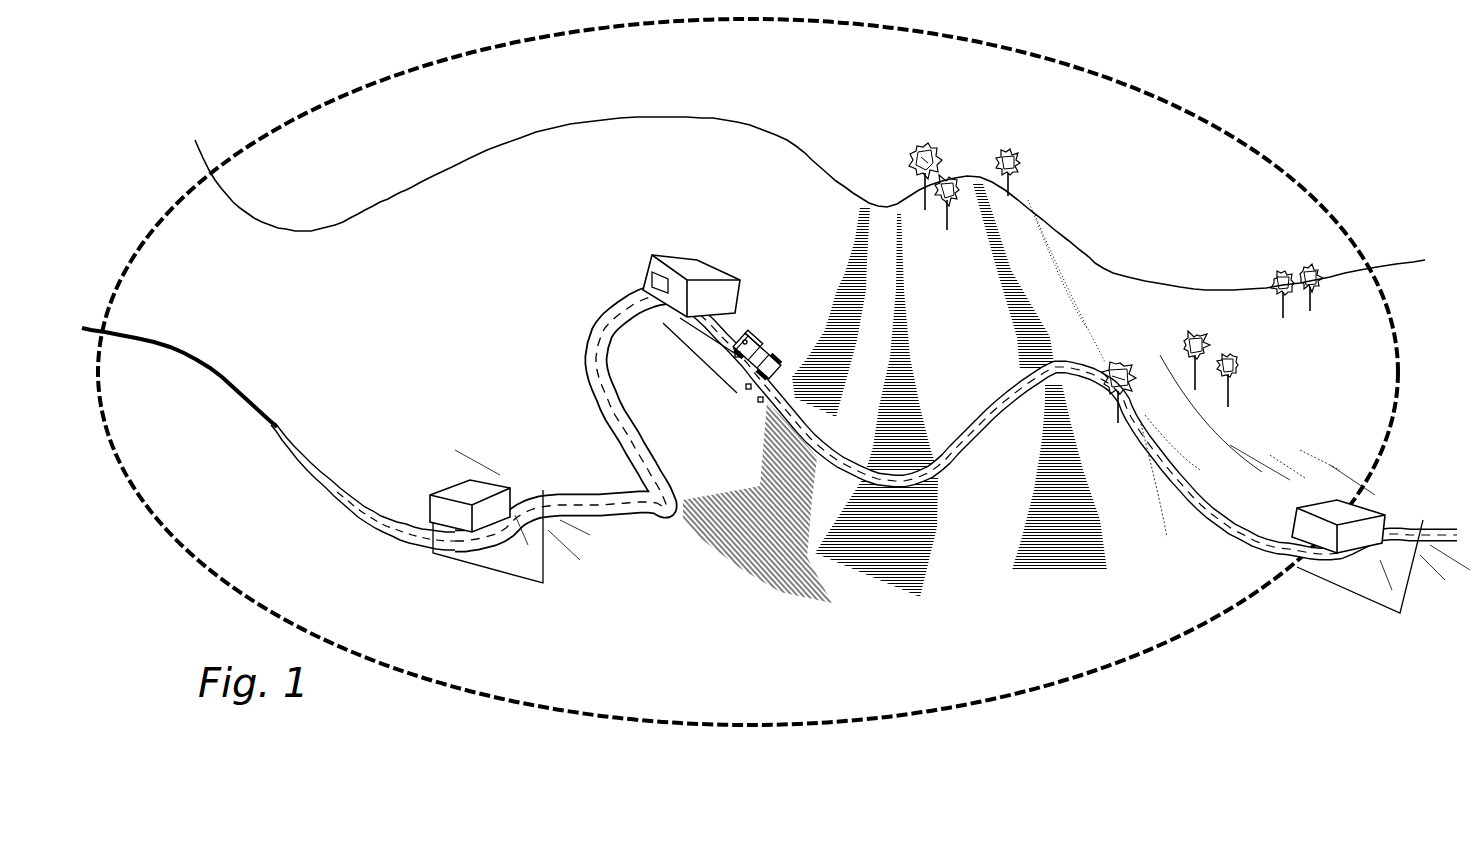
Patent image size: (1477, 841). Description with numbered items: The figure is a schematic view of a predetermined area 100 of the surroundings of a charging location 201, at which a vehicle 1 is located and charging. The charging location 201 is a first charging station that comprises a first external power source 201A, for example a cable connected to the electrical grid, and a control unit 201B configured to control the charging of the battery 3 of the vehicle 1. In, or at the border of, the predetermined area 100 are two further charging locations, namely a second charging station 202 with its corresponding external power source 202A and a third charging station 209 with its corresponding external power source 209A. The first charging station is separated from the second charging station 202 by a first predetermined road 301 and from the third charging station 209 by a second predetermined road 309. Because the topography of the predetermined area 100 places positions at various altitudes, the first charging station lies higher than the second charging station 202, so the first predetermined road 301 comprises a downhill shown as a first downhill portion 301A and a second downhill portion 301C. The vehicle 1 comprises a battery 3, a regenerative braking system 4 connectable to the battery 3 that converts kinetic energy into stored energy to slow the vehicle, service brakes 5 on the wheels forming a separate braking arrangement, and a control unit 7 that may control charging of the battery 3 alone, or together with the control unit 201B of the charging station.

The predetermined area 100 is at (1153, 668).
The vehicle 1 is at (775, 330).
The battery 3 is at (748, 392).
The regenerative braking system 4 is at (762, 404).
The service brakes 5 is at (737, 358).
The control unit 7 is at (746, 340).
The charging location 201 is at (716, 246).
The first external power source 201A is at (698, 360).
The control unit 201B is at (658, 272).
The second charging station 202 is at (1357, 490).
The external power source 202A is at (1323, 580).
The third charging station 209 is at (482, 470).
The external power source 209A is at (465, 565).
The first predetermined road 301 is at (1060, 353).
The first downhill portion 301A is at (847, 427).
The second downhill portion 301C is at (1230, 447).
The second predetermined road 309 is at (642, 540).